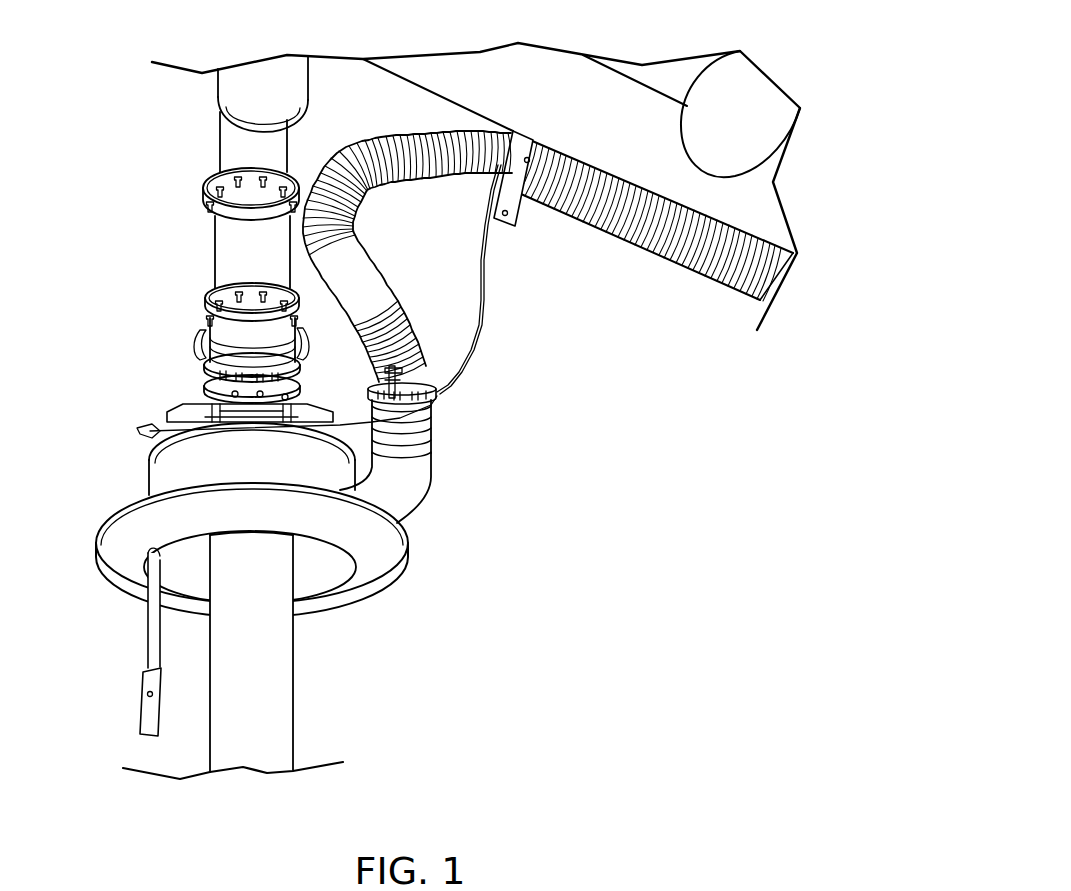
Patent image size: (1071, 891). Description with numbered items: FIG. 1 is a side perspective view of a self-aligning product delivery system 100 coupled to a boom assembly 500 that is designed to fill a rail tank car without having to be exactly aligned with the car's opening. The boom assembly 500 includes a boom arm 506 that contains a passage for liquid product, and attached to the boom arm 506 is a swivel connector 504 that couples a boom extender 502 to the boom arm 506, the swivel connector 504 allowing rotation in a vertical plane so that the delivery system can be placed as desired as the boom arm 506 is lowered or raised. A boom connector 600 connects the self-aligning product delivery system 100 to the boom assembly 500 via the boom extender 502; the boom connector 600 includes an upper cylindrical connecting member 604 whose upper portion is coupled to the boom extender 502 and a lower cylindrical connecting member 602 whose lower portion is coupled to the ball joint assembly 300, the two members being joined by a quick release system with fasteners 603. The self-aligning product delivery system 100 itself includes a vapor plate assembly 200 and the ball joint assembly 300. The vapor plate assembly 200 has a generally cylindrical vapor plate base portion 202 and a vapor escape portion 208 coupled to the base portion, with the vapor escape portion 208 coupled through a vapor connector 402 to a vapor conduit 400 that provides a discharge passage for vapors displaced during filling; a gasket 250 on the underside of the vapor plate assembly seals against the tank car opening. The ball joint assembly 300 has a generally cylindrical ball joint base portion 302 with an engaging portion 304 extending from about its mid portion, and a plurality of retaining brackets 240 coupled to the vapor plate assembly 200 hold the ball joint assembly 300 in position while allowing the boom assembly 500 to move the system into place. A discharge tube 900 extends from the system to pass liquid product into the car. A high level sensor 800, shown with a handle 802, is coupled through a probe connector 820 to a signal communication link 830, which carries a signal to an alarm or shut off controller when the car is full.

The self-aligning product delivery system 100 is at (82, 390).
The vapor plate assembly 200 is at (128, 477).
The vapor plate base portion 202 is at (283, 466).
The vapor escape portion 208 is at (420, 475).
The retaining bracket 240 is at (176, 416).
The gasket 250 is at (410, 550).
The ball joint assembly 300 is at (185, 392).
The ball joint base portion 302 is at (308, 406).
The engaging portion 304 is at (258, 404).
The vapor conduit 400 is at (407, 328).
The vapor connector 402 is at (438, 382).
The boom assembly 500 is at (181, 97).
The boom extender 502 is at (213, 245).
The swivel connector 504 is at (290, 157).
The boom arm 506 is at (548, 82).
The boom connector 600 is at (180, 337).
The lower cylindrical connecting member 602 is at (232, 410).
The fasteners 603 is at (309, 345).
The upper cylindrical connecting member 604 is at (255, 322).
The high level sensor 800 is at (146, 660).
The handle 802 is at (160, 707).
The probe connector 820 is at (145, 433).
The signal communication link 830 is at (482, 338).
The discharge tube 900 is at (293, 682).